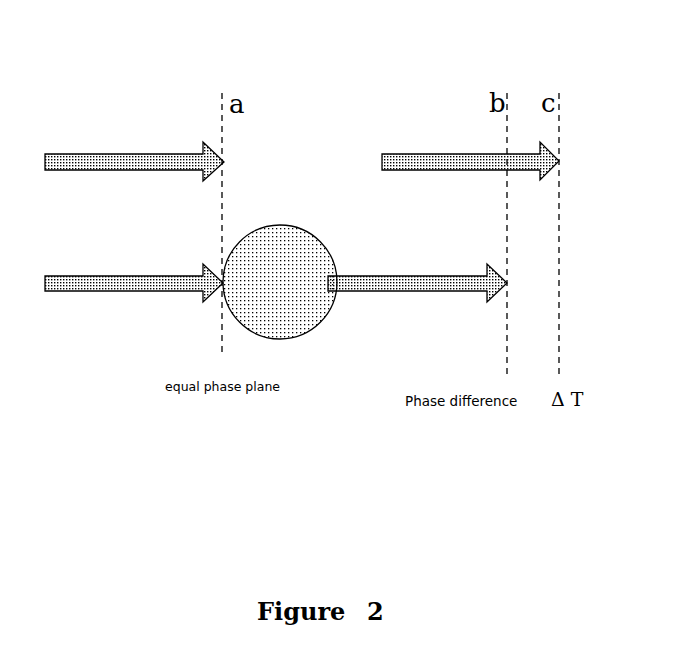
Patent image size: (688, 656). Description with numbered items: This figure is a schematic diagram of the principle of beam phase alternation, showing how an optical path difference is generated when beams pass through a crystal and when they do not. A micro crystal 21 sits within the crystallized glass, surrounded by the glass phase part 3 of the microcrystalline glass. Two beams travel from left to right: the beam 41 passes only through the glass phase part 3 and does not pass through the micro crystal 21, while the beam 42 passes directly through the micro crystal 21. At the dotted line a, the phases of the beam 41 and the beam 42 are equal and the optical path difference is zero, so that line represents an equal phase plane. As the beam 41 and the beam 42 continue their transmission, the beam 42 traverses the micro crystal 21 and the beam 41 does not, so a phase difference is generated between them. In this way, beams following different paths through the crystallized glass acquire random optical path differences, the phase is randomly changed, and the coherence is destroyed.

The beam 41 is at (302, 98).
The beam 42 is at (276, 391).
The micro crystal 21 is at (330, 250).
The glass phase part 3 is at (303, 159).